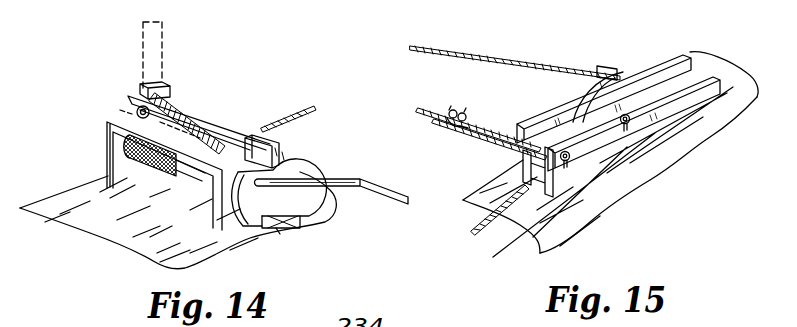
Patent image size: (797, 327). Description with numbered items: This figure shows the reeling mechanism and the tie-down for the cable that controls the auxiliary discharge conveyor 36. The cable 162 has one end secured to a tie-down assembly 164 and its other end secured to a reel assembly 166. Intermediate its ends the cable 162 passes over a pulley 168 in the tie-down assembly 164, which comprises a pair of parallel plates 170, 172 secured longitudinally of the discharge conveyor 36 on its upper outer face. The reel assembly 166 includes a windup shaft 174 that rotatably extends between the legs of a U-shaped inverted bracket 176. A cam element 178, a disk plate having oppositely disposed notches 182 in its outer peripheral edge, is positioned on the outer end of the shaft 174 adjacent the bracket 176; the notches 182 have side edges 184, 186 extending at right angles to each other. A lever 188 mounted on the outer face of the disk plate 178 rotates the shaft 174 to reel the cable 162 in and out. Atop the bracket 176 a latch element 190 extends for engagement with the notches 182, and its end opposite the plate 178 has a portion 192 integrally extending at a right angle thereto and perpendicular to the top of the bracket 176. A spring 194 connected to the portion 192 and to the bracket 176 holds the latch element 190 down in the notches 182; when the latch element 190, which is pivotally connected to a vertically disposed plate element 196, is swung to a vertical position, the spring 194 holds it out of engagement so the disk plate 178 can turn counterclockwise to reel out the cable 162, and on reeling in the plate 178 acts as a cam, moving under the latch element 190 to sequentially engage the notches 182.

In FIG. 15, the discharge conveyor 36 is at (730, 107).
In FIG. 14, the cable 162 is at (297, 108).
In FIG. 15, the cable 162 is at (420, 110).
In FIG. 15, the tie-down assembly 164 is at (525, 108).
In FIG. 14, the reel assembly 166 is at (70, 134).
In FIG. 15, the pulley 168 is at (606, 90).
In FIG. 15, the parallel plate 170 is at (665, 60).
In FIG. 15, the parallel plate 172 is at (698, 72).
In FIG. 14, the windup shaft 174 is at (196, 176).
In FIG. 14, the U-shaped inverted bracket 176 is at (230, 214).
In FIG. 14, the cam element 178 is at (283, 170).
In FIG. 14, the notches 182 is at (288, 226).
In FIG. 14, the side edge 184 is at (302, 214).
In FIG. 14, the side edge 186 is at (276, 234).
In FIG. 14, the lever 188 is at (352, 180).
In FIG. 14, the latch element 190 is at (270, 158).
In FIG. 14, the portion 192 is at (171, 90).
In FIG. 14, the spring 194 is at (178, 111).
In FIG. 14, the vertically disposed plate element 196 is at (220, 134).